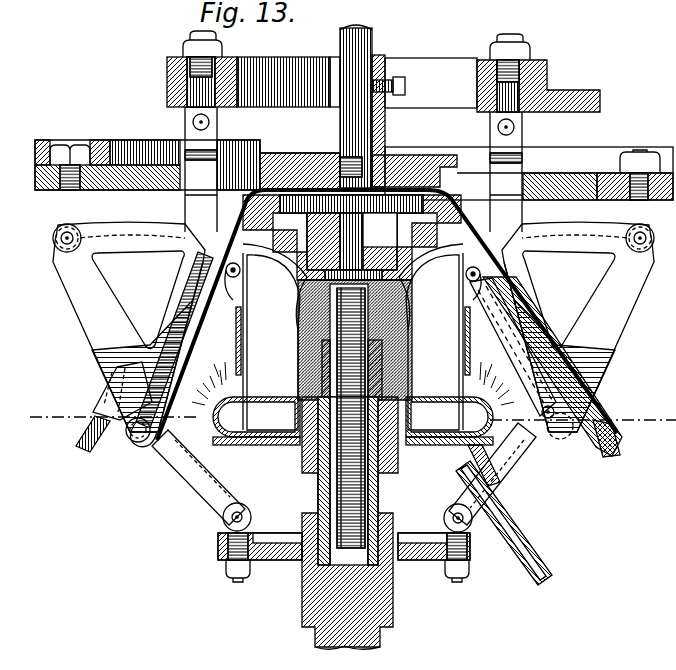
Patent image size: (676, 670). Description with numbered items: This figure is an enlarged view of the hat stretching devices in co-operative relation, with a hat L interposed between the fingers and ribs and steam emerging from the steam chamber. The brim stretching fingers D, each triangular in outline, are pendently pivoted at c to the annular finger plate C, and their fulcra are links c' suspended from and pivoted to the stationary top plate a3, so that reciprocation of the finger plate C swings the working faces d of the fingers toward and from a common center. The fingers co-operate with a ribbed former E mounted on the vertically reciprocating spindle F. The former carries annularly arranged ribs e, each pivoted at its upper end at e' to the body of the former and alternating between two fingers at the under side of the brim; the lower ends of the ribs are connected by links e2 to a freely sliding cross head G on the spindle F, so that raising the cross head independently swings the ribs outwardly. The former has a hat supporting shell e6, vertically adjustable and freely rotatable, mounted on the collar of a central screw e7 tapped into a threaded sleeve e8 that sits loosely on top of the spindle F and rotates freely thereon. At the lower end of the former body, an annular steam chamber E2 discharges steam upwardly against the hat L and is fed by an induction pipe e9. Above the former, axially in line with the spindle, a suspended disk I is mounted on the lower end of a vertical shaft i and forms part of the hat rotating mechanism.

The vertical shaft i is at (360, 102).
The top plate a3 is at (383, 109).
The annular finger plate C is at (173, 165).
The suspended disk I is at (408, 159).
The links c' is at (353, 169).
The finger pivot c is at (343, 249).
The brim stretching fingers D is at (112, 323).
The working faces d is at (188, 302).
The ribs e is at (347, 416).
The hat L is at (580, 388).
The hat supporting shell e6 is at (250, 229).
The threaded nut or sleeve e8 is at (398, 319).
The spindle F is at (378, 501).
The central screw e7 is at (333, 477).
The ribbed former E is at (353, 341).
The annular steam chamber E2 is at (228, 418).
The rib pivot e' is at (353, 285).
The links e2 is at (197, 457).
The induction pipe e9 is at (506, 523).
The cross head G is at (270, 543).